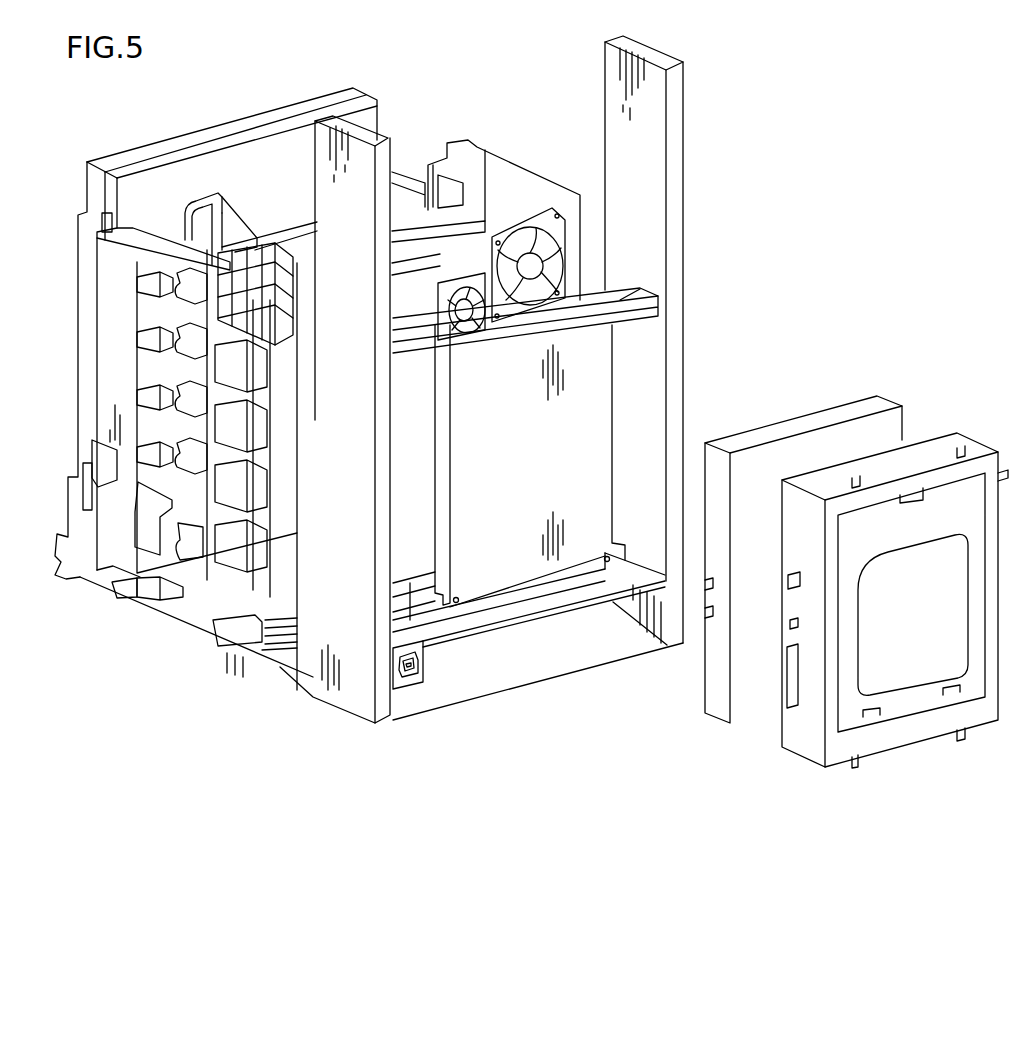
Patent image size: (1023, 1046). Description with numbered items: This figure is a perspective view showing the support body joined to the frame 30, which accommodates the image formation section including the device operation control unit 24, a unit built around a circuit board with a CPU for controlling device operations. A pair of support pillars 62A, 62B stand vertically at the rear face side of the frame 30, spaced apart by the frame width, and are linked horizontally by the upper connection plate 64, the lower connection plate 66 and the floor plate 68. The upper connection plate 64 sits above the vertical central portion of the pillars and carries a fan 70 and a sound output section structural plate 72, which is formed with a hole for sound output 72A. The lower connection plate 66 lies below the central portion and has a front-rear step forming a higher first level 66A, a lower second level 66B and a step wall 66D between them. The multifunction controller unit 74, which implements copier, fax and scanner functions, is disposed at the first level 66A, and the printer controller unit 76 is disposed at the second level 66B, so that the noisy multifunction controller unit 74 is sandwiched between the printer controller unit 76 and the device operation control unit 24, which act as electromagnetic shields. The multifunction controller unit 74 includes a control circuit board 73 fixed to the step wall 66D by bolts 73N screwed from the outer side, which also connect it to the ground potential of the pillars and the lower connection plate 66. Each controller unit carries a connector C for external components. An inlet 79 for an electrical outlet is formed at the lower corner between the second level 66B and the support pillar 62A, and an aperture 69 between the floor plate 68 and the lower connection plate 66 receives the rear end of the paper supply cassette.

The frame 30 is at (88, 584).
The device operation control unit 24 is at (253, 593).
The support pillar 62A is at (681, 351).
The support pillar 62B is at (295, 703).
The upper connection plate 64 is at (628, 284).
The fan 70 is at (530, 225).
The sound output section structural plate 72 is at (485, 250).
The hole for sound output 72A is at (450, 288).
The control circuit board 73 is at (608, 412).
The bolts 73N is at (462, 600).
The floor plate 68 is at (473, 683).
The aperture 69 is at (547, 670).
The lower connection plate 66 is at (390, 815).
The first level 66A is at (409, 592).
The second level 66B is at (408, 636).
The step wall 66D is at (428, 607).
The inlet 79 is at (407, 687).
The multifunction controller unit 74 is at (869, 396).
The printer controller unit 76 is at (948, 440).
The connector C is at (710, 615).